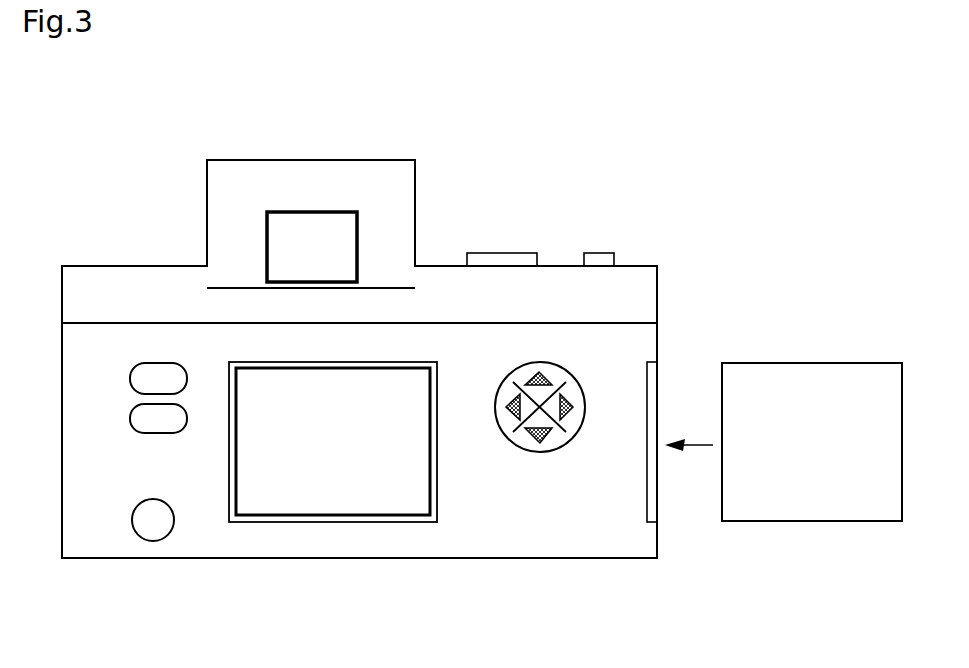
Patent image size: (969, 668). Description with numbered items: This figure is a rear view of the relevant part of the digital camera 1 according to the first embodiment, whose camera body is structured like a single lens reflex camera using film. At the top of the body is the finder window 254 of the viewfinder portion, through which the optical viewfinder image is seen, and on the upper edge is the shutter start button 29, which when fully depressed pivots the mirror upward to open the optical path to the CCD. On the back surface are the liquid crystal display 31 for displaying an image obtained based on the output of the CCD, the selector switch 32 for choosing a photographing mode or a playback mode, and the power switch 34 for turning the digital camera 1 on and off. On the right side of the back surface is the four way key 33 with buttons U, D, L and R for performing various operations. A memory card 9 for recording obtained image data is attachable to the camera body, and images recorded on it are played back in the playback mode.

The digital camera 1 is at (86, 133).
The finder window 254 is at (236, 234).
The shutter start button 29 is at (596, 253).
The selector switch 32 is at (112, 399).
The liquid crystal display (LCD) 31 is at (332, 522).
The power switch 34 is at (152, 541).
The four way key 33 is at (518, 465).
The memory card 9 is at (795, 521).